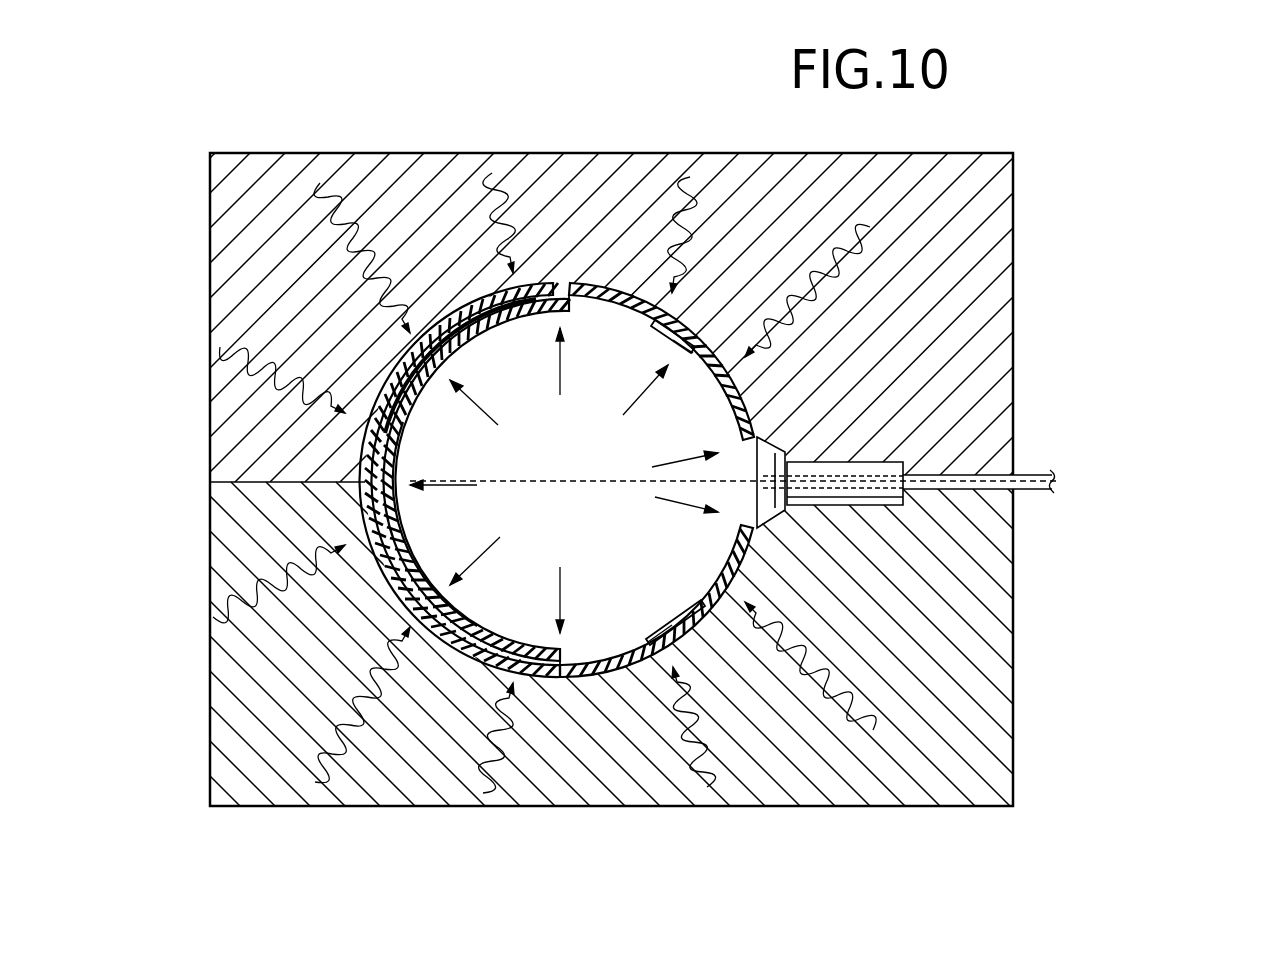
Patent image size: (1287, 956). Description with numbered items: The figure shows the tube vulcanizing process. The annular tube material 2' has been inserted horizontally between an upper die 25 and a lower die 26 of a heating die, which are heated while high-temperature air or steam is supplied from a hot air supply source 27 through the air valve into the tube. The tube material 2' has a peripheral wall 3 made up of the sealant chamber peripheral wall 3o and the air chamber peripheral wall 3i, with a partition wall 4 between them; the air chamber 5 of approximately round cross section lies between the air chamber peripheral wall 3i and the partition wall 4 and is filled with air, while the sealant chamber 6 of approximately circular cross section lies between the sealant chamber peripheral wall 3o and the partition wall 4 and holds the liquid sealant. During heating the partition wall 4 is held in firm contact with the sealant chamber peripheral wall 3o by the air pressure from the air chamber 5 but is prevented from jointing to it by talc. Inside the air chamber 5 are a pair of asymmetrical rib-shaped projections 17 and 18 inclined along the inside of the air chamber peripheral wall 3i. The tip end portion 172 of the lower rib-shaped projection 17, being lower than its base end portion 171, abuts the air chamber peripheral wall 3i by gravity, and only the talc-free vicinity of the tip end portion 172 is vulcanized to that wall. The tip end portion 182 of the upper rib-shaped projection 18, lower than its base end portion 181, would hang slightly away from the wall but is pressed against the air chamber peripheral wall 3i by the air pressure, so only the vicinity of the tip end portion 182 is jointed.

The tube material 2' is at (557, 534).
The peripheral wall 3 is at (557, 589).
The sealant chamber peripheral wall 3o is at (522, 676).
The air chamber peripheral wall 3i is at (627, 670).
The partition wall 4 is at (403, 533).
The air chamber 5 is at (575, 477).
The sealant chamber 6 is at (410, 393).
The rib-shaped projection 17 is at (644, 582).
The base end portion 171 is at (700, 612).
The tip end portion 172 is at (620, 613).
The rib-shaped projection 18 is at (646, 385).
The base end portion 181 is at (656, 330).
The tip end portion 182 is at (662, 345).
The upper die 25 is at (1020, 271).
The lower die 26 is at (1020, 627).
The hot air supply source 27 is at (1065, 481).